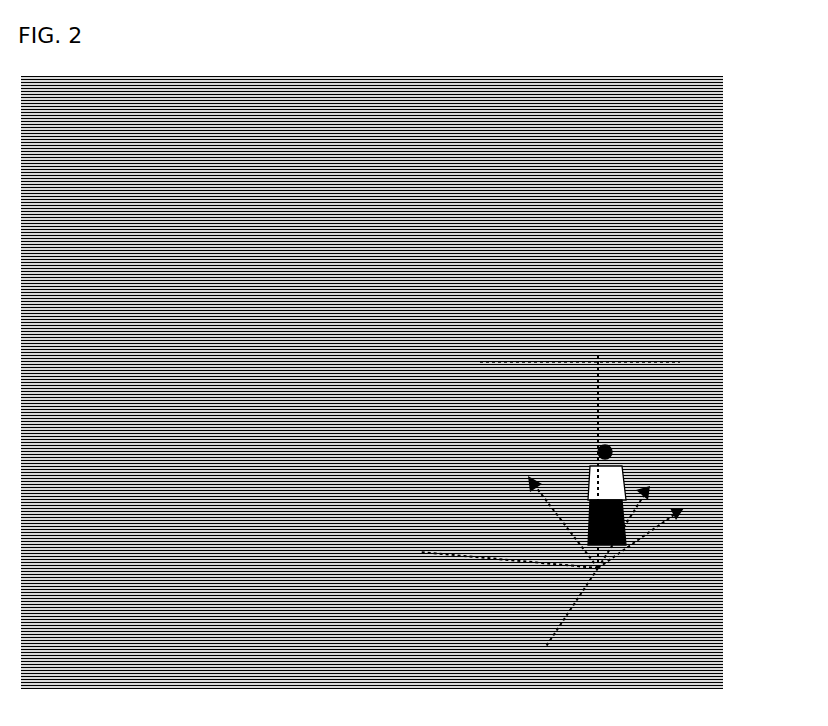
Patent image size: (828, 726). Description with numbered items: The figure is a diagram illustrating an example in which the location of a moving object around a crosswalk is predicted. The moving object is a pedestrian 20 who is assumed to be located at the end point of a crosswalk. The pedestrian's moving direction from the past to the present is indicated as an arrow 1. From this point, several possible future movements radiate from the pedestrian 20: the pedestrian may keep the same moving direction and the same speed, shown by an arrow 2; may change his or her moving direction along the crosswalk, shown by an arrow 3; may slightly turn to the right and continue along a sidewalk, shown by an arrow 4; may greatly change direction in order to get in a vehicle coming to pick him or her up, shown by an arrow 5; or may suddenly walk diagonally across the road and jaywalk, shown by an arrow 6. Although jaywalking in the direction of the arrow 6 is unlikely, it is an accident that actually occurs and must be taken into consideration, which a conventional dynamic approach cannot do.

The pedestrian 20 is at (612, 474).
The arrow 1 is at (559, 622).
The arrow 2 is at (635, 513).
The arrow 3 is at (555, 510).
The arrow 4 is at (656, 528).
The arrow 5 is at (490, 553).
The arrow 6 is at (597, 448).